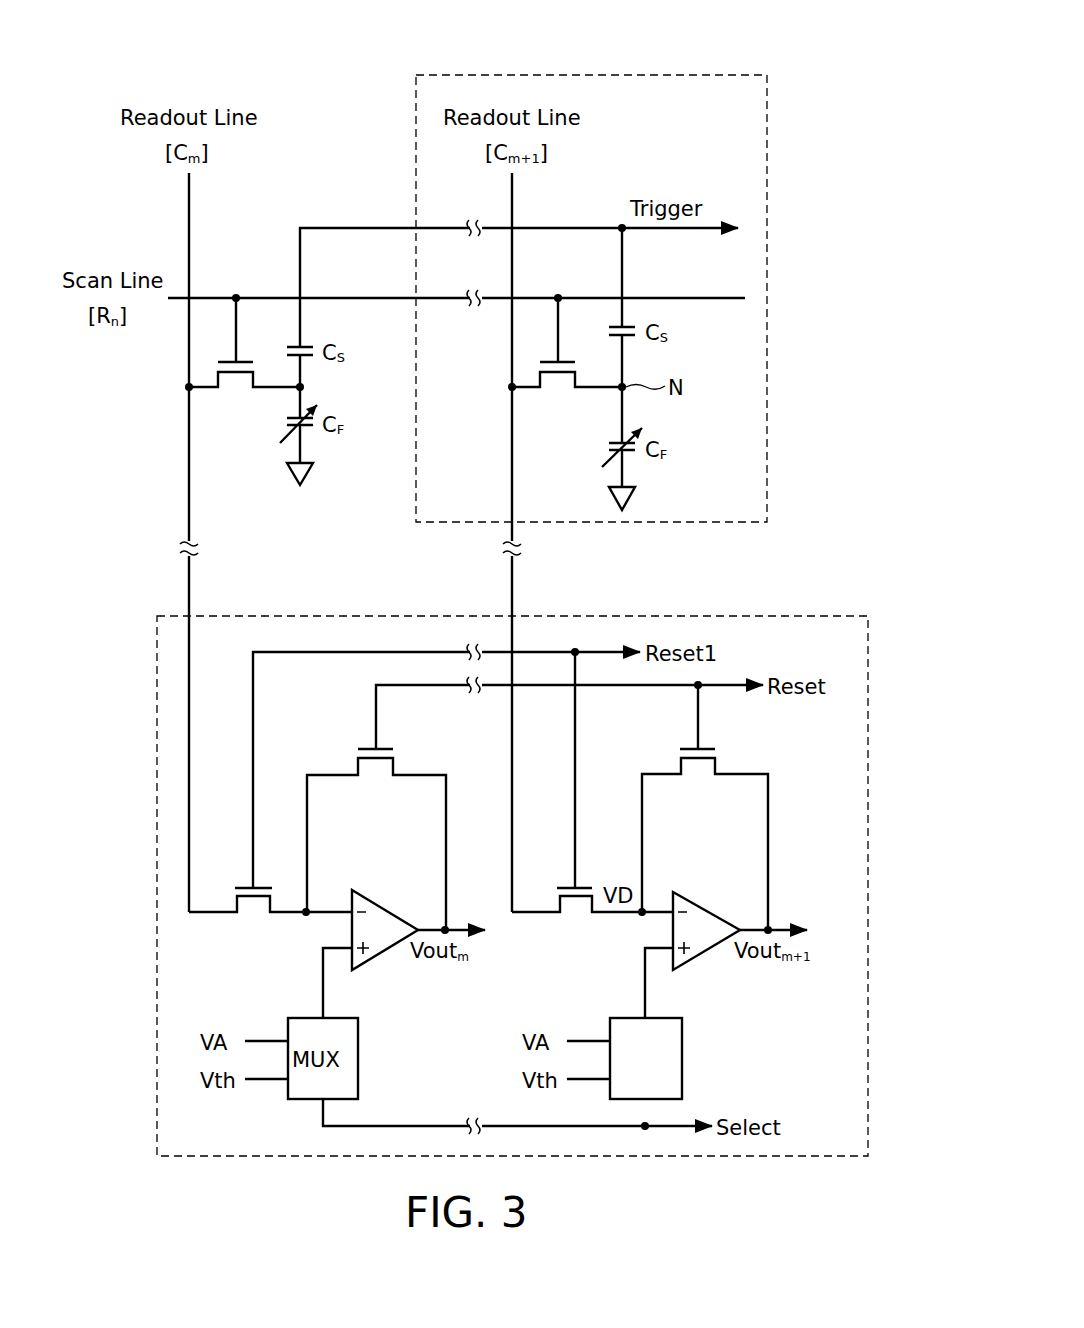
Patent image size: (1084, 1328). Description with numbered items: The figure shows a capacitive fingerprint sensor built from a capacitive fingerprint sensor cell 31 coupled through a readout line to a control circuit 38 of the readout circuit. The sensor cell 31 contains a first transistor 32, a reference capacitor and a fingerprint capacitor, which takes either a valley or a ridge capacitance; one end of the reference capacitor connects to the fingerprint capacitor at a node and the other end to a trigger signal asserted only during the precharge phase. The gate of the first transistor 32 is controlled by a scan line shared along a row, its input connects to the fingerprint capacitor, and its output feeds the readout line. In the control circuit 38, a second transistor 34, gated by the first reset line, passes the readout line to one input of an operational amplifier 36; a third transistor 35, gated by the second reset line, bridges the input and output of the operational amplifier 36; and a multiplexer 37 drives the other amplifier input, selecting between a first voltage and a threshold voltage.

The capacitive fingerprint sensor cell 31 is at (593, 75).
The first transistor 32 is at (557, 393).
The second transistor 34 is at (575, 918).
The third transistor 35 is at (720, 748).
The operational amplifier 36 is at (708, 948).
The multiplexer 37 is at (683, 1058).
The control circuit 38 is at (825, 615).